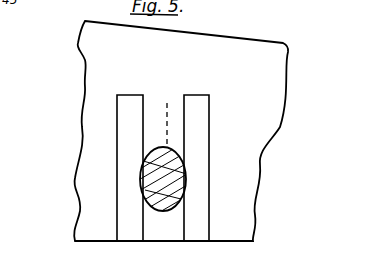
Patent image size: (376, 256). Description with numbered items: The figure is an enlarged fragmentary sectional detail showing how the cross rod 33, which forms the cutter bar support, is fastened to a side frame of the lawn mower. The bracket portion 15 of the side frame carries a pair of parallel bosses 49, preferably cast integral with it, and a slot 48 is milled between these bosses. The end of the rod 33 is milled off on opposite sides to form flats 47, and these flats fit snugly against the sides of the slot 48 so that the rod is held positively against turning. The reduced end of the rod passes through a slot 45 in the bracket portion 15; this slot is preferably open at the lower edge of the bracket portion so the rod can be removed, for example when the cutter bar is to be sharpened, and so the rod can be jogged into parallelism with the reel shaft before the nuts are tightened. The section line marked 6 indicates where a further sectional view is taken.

The bracket portion 15 is at (250, 53).
The slot 48 is at (145, 106).
The parallel bosses 49 is at (195, 216).
The cross rod 33 is at (184, 176).
The slot 45 is at (165, 122).
The flats 47 is at (143, 186).
The section line 6- 6 is at (58, 178).